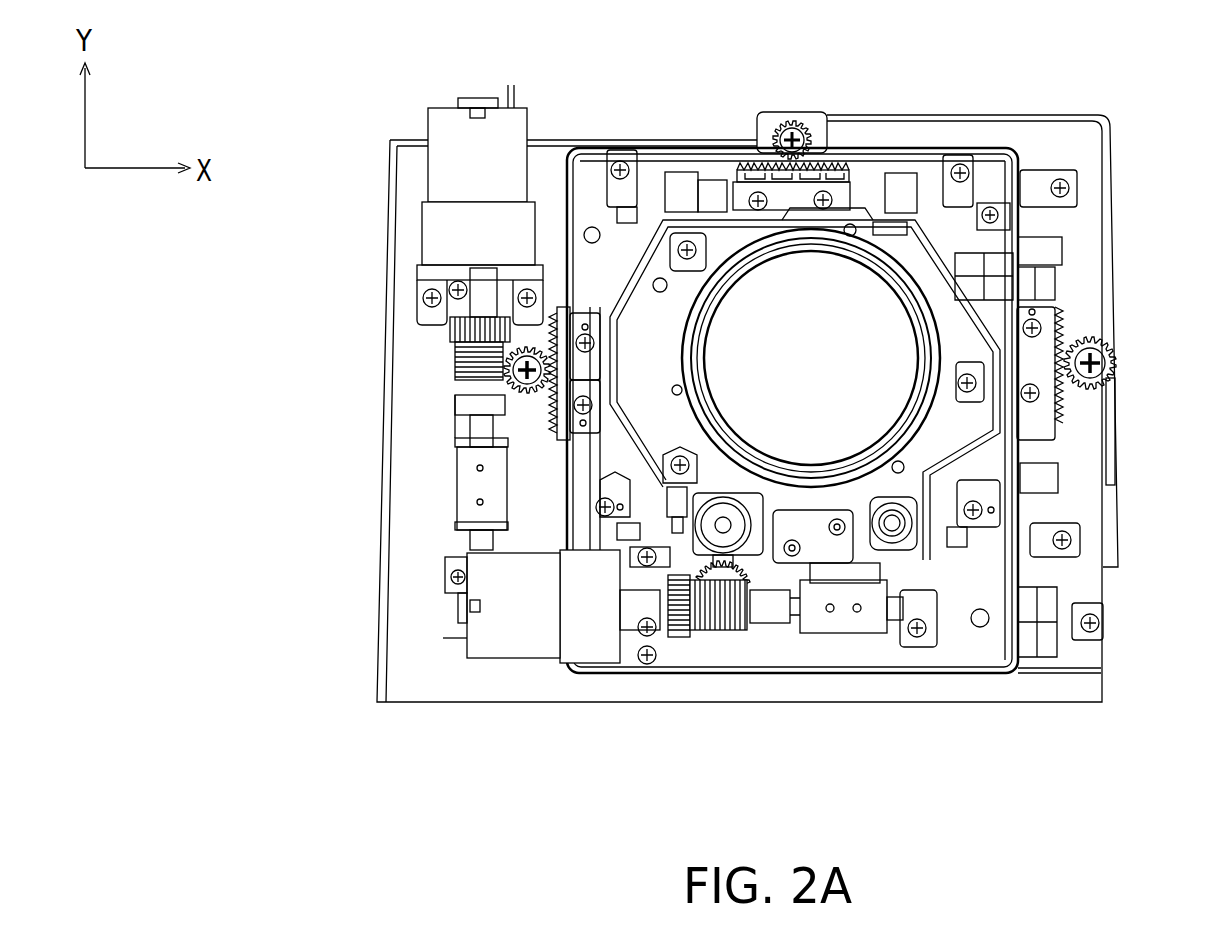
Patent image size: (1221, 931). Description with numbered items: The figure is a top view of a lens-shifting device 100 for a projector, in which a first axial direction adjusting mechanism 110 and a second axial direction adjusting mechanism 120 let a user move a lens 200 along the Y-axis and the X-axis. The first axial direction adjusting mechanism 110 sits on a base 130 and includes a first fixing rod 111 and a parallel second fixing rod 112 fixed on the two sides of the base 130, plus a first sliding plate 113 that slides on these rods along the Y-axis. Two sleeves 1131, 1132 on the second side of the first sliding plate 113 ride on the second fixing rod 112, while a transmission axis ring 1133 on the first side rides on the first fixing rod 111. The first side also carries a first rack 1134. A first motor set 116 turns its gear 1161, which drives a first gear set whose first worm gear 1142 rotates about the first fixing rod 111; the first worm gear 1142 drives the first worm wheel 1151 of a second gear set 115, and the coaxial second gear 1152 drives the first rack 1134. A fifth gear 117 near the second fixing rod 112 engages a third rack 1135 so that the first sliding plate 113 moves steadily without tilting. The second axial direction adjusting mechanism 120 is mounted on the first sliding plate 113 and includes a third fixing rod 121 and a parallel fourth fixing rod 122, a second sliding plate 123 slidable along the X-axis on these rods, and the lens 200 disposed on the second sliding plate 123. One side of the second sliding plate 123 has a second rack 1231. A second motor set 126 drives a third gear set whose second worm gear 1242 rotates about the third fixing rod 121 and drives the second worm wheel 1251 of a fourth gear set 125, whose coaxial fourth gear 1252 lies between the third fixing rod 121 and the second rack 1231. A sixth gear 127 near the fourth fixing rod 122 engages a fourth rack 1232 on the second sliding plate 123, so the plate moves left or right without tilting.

The lens-shifting device 100 is at (1212, 790).
The first axial direction adjusting mechanism 110 is at (438, 380).
The first fixing rod 111 is at (457, 433).
The second fixing rod 112 is at (1053, 287).
The first sliding plate 113 is at (587, 177).
The second gear set 115 is at (287, 373).
The first motor set 116 is at (443, 127).
The fifth gear 117 is at (1110, 348).
The second axial direction adjusting mechanism 120 is at (732, 645).
The third fixing rod 121 is at (840, 670).
The fourth fixing rod 122 is at (713, 193).
The second sliding plate 123 is at (633, 193).
The fourth gear set 125 is at (883, 770).
The second motor set 126 is at (517, 640).
The sixth gear 127 is at (792, 118).
The base 130 is at (1077, 143).
The lens 200 is at (877, 303).
The sleeve 1131 is at (1065, 253).
The sleeve 1132 is at (1063, 478).
The transmission axis ring 1133 is at (473, 485).
The first rack 1134 is at (550, 322).
The third rack 1135 is at (1067, 318).
The first worm gear 1142 is at (457, 370).
The first worm wheel 1151 is at (462, 407).
The second gear 1152 is at (500, 418).
The gear 1161 is at (452, 332).
The second rack 1231 is at (620, 630).
The fourth rack 1232 is at (840, 162).
The second worm gear 1242 is at (700, 630).
The second worm wheel 1251 is at (740, 572).
The fourth gear 1252 is at (792, 612).